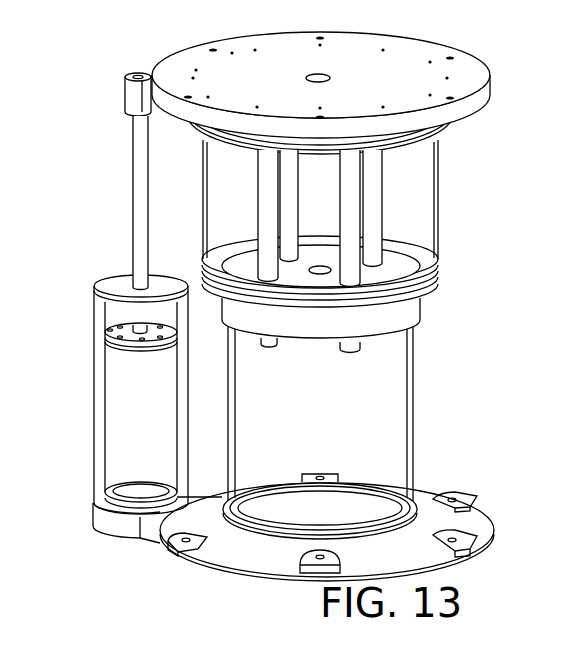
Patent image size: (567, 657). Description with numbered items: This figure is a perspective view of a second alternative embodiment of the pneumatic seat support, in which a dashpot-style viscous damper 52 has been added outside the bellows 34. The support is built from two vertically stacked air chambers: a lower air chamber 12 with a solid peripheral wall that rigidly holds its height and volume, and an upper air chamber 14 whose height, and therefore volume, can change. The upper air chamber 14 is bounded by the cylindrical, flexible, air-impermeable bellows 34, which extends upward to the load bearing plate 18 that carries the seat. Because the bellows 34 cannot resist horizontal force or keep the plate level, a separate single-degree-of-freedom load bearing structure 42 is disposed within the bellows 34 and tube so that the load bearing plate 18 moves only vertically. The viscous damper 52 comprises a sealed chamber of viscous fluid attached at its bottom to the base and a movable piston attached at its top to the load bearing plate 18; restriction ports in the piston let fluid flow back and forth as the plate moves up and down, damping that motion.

The lower air chamber 12 is at (436, 403).
The upper air chamber 14 is at (349, 155).
The load bearing plate 18 is at (405, 68).
The bellows 34 is at (438, 222).
The load bearing structure 42 is at (418, 190).
The viscous damper 52 is at (102, 211).